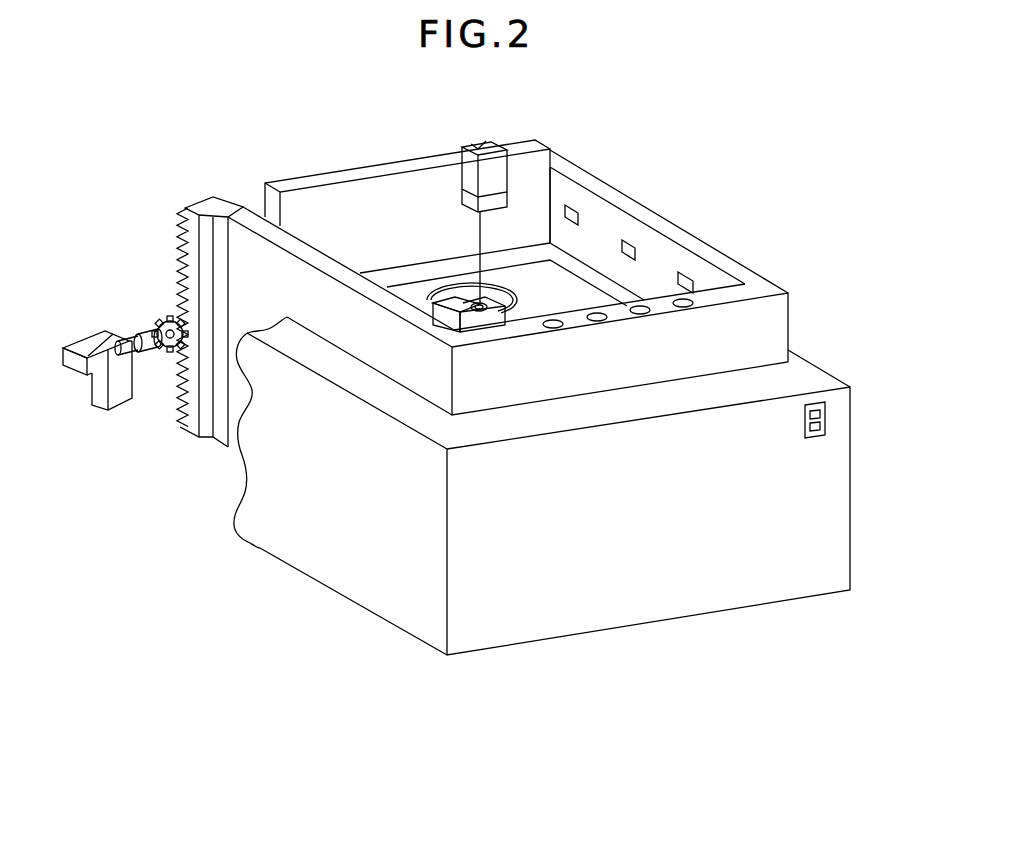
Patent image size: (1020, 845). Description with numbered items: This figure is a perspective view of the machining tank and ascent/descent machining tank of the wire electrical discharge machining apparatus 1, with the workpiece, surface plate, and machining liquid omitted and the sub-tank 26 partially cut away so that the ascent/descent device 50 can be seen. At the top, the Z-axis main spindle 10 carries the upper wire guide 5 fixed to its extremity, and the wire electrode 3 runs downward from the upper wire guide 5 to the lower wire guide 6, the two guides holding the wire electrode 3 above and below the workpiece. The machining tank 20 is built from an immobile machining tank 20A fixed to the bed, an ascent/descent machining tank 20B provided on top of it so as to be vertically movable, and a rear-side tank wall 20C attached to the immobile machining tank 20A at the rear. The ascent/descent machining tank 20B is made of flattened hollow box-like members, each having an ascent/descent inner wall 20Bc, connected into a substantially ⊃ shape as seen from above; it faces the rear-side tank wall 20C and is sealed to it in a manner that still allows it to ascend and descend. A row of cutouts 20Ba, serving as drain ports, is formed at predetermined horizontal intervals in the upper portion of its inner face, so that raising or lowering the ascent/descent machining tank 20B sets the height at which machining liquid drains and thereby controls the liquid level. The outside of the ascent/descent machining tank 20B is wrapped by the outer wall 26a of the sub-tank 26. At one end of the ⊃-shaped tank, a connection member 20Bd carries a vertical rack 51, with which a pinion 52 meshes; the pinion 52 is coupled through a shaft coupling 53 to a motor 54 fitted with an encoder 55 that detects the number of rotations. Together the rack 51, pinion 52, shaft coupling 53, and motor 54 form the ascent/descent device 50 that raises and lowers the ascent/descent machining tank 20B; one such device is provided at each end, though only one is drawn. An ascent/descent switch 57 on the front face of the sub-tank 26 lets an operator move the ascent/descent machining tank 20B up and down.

The wire electrical discharge machining apparatus 1 is at (518, 125).
The wire electrode 3 is at (477, 233).
The upper wire guide 5 is at (462, 203).
The lower wire guide 6 is at (503, 317).
The Z-axis main spindle 10 is at (463, 176).
The machining tank 20 is at (600, 212).
The immobile machining tank 20A is at (622, 293).
The ascent/descent machining tank 20B is at (780, 340).
The cutouts 20Ba is at (688, 278).
The ascent/descent inner wall 20Bc is at (605, 242).
The connection member 20Bd is at (222, 374).
The rear-side tank wall 20C is at (366, 172).
The sub-tank 26 is at (817, 590).
The outer wall 26a is at (580, 600).
The ascent/descent device 50 is at (70, 294).
The rack 51 is at (180, 232).
The pinion 52 is at (156, 322).
The shaft coupling 53 is at (152, 352).
The motor 54 is at (118, 399).
The encoder 55 is at (65, 362).
The ascent/descent switch 57 is at (828, 420).